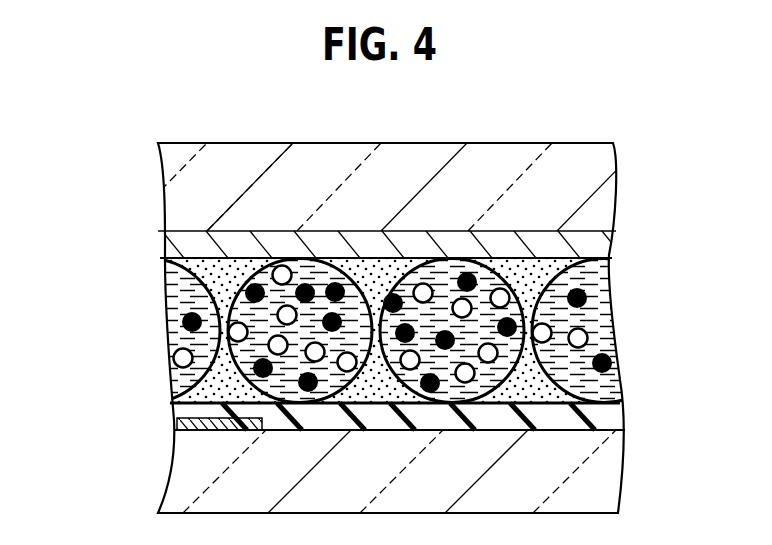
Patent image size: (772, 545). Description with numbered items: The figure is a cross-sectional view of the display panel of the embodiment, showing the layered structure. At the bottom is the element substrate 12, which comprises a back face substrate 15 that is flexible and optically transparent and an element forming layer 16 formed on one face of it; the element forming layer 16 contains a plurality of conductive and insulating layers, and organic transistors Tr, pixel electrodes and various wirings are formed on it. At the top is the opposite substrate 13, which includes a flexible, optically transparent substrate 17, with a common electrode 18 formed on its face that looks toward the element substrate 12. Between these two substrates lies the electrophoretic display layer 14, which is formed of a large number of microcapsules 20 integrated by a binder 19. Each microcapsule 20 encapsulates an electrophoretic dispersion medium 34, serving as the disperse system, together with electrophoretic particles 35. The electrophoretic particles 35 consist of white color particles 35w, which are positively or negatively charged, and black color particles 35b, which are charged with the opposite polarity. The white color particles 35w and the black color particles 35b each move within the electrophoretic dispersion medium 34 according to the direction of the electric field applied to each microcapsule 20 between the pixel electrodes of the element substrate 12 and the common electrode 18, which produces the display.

The element substrate 12 is at (448, 458).
The opposite substrate 13 is at (428, 200).
The electrophoretic display layer 14 is at (390, 328).
The back face substrate 15 is at (430, 471).
The element forming layer 16 is at (620, 420).
The transparent substrate 17 is at (615, 192).
The common electrode 18 is at (424, 237).
The binder 19 is at (540, 368).
The microcapsule 20 is at (510, 278).
The electrophoretic dispersion medium 34 is at (163, 260).
The electrophoretic particles 35 is at (327, 330).
The black color particles 35b is at (180, 313).
The white color particles 35w is at (173, 358).
The organic transistor Tr is at (177, 421).